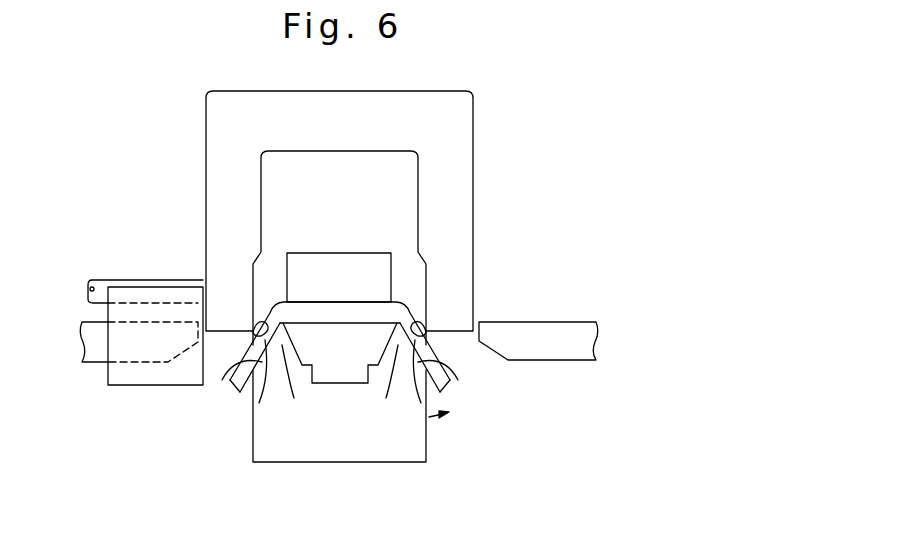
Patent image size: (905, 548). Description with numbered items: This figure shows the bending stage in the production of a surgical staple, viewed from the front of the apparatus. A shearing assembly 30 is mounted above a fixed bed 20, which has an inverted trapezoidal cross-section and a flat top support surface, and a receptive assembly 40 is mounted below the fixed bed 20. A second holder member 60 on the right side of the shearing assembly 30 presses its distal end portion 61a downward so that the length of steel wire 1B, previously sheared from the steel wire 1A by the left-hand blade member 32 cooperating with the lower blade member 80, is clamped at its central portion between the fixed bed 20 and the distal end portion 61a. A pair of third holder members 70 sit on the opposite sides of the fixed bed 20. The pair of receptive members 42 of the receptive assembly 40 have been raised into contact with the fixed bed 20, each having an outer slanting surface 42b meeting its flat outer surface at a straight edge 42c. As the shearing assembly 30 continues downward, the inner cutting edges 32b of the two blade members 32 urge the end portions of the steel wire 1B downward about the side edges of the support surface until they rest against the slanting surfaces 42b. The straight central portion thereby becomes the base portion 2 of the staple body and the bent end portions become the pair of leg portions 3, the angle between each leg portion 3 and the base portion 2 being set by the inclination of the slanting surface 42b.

The steel wire 1A is at (132, 280).
The length of steel wire 1B is at (370, 327).
The base portion 2 is at (305, 312).
The leg portion 3 is at (436, 338).
The fixed bed 20 is at (333, 357).
The shearing assembly 30 is at (478, 126).
The blade member 32 is at (222, 207).
The inner cutting edge 32b is at (256, 324).
The receptive assembly 40 is at (429, 461).
The receptive member 42 is at (340, 380).
The outer slanting surface 42b is at (222, 380).
The edge 42c is at (236, 392).
The second holder member 60 is at (340, 230).
The distal end portion 61a is at (334, 254).
The third holder member 70 is at (92, 357).
The lower blade member 80 is at (140, 387).